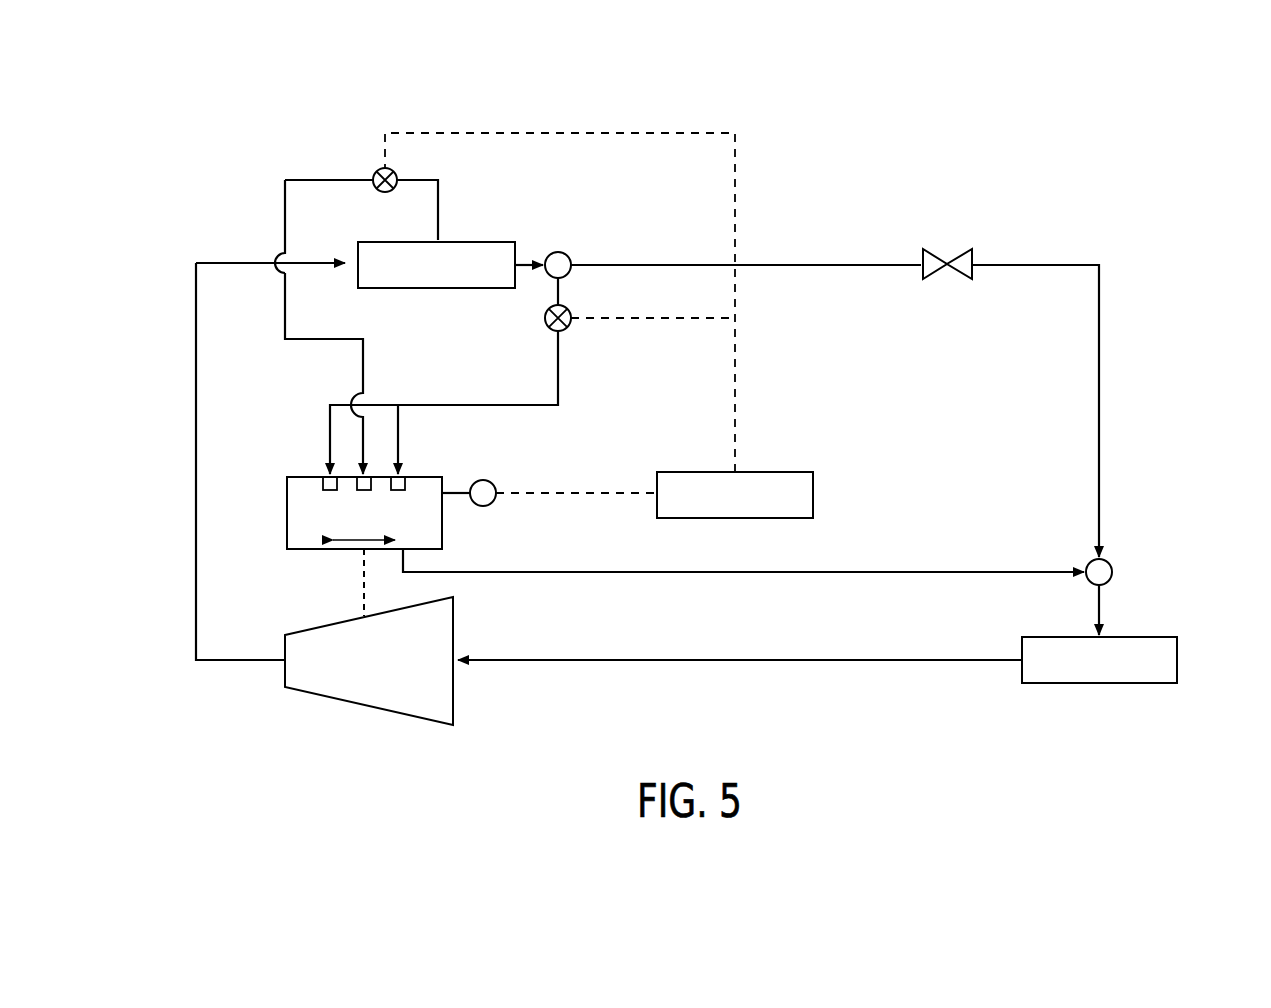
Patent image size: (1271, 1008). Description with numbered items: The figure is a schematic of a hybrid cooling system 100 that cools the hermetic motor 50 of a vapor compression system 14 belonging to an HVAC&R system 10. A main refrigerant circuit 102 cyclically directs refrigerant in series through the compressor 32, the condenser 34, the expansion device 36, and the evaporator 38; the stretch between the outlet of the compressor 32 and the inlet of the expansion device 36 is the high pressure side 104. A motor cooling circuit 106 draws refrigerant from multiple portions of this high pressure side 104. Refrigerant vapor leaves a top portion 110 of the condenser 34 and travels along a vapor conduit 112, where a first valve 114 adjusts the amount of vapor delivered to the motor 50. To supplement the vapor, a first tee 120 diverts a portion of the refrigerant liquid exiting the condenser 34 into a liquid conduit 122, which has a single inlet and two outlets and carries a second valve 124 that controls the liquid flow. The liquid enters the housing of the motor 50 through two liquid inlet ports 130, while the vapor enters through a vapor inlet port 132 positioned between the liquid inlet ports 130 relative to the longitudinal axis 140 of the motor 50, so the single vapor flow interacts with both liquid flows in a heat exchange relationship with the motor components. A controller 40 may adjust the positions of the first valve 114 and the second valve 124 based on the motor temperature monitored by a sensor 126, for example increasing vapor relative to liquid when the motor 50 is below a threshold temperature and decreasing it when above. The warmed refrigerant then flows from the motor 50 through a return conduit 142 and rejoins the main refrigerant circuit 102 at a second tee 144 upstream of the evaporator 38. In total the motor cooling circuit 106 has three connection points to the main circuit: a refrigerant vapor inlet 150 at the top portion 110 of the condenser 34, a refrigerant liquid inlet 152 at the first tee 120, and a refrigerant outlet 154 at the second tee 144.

The HVAC&R system 10 is at (1067, 148).
The vapor compression system 14 is at (998, 210).
The compressor 32 is at (372, 707).
The condenser 34 is at (468, 240).
The expansion device 36 is at (940, 256).
The evaporator 38 is at (1140, 637).
The controller 40 is at (773, 472).
The motor 50 is at (287, 533).
The hybrid cooling system 100 is at (222, 190).
The main refrigerant circuit 102 is at (185, 372).
The high pressure side 104 is at (195, 405).
The motor cooling circuit 106 is at (265, 330).
The top portion 110 is at (496, 237).
The vapor conduit 112 is at (287, 298).
The first valve 114 is at (377, 170).
The first tee 120 is at (566, 254).
The liquid conduit 122 is at (558, 357).
The second valve 124 is at (568, 328).
The sensor 126 is at (496, 483).
The liquid inlet ports 130 is at (325, 484).
The vapor inlet port 132 is at (352, 487).
The longitudinal axis 140 is at (352, 552).
The return conduit 142 is at (742, 572).
The second tee 144 is at (1110, 562).
The refrigerant vapor inlet 150 is at (446, 222).
The refrigerant liquid inlet 152 is at (571, 297).
The refrigerant outlet 154 is at (1082, 583).